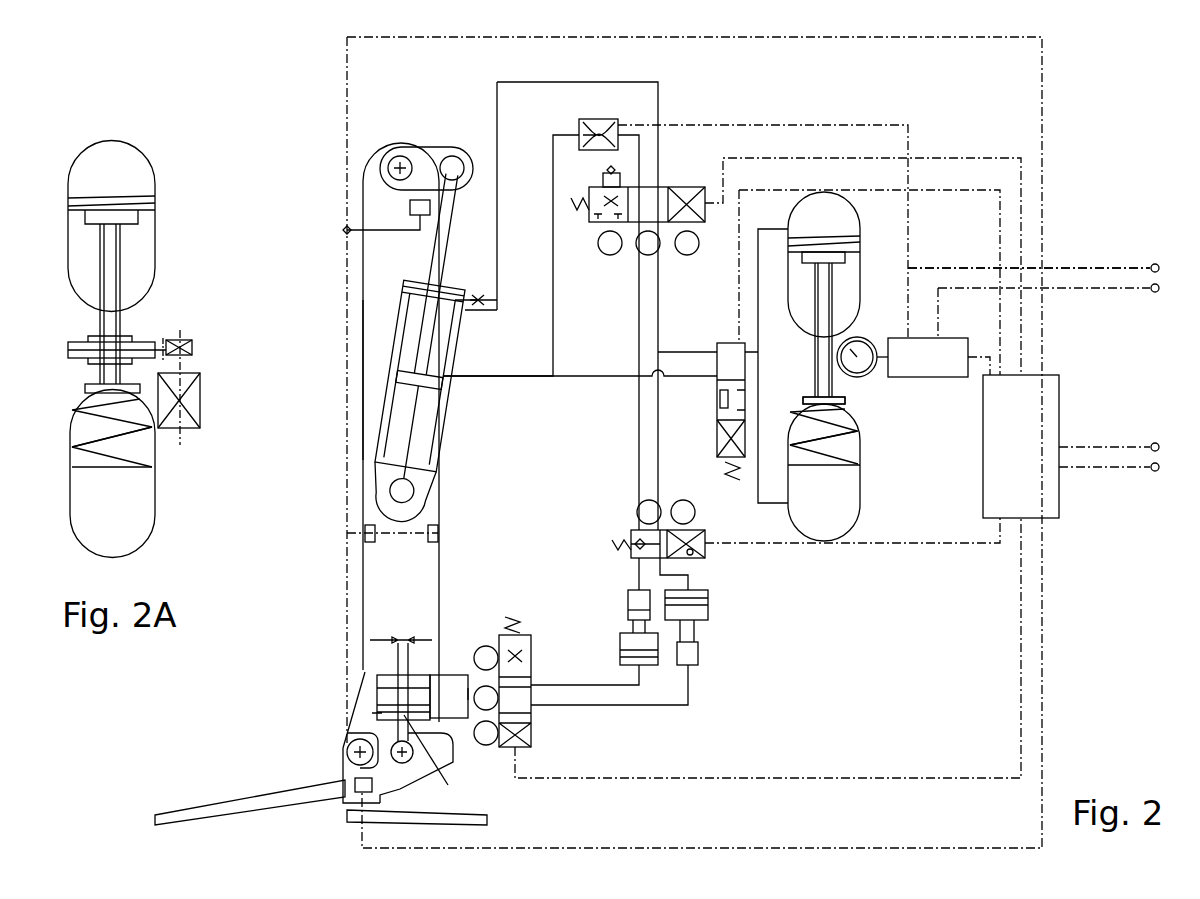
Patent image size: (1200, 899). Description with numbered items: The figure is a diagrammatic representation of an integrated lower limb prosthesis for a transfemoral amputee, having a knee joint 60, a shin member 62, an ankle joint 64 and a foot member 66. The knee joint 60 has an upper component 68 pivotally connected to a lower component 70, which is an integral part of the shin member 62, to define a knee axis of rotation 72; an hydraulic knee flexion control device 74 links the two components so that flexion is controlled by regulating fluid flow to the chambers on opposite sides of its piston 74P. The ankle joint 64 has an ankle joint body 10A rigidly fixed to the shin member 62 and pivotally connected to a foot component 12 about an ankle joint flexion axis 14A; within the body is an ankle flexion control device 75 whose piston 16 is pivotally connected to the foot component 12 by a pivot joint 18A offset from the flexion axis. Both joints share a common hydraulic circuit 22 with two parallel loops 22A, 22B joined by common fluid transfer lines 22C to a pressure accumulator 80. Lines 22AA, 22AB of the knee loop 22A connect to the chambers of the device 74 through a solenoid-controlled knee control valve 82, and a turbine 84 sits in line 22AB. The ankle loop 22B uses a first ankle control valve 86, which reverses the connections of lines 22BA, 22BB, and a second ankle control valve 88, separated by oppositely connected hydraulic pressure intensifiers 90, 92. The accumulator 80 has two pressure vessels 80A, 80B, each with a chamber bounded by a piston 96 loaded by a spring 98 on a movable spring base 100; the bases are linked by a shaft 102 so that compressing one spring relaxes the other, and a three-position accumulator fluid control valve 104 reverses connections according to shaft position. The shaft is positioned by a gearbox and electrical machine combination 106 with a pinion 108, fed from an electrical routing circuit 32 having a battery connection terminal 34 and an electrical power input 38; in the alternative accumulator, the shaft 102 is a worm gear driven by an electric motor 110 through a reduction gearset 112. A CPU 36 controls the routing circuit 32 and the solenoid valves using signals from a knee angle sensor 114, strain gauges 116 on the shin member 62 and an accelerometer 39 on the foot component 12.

In FIG. 2, the ankle joint body 10A is at (347, 728).
In FIG. 2, the foot component 12 is at (343, 775).
In FIG. 2, the ankle joint flexion axis 14A is at (346, 749).
In FIG. 2, the piston 16 is at (380, 688).
In FIG. 2, the pivot pin 18A is at (401, 768).
In FIG. 2, the hydraulic circuit 22 is at (577, 408).
In FIG. 2, the first hydraulic loop 22A is at (582, 325).
In FIG. 2, the hydraulic line 22AA is at (497, 90).
In FIG. 2, the hydraulic line 22AB is at (562, 135).
In FIG. 2, the hydraulic loop 22B is at (535, 578).
In FIG. 2, the hydraulic line 22BA is at (453, 718).
In FIG. 2, the hydraulic line 22BB is at (452, 675).
In FIG. 2, the fluid transfer lines 22C is at (683, 372).
In FIG. 2, the electrical routing circuit 32 is at (948, 338).
In FIG. 2, the battery connection terminal 34 is at (1153, 292).
In FIG. 2, the CPU 36 is at (1059, 405).
In FIG. 2, the electrical power input 38 is at (1153, 264).
In FIG. 2, the accelerometer 39 is at (356, 792).
In FIG. 2, the knee joint 60 is at (345, 152).
In FIG. 2, the shin member 62 is at (363, 382).
In FIG. 2, the ankle joint 64 is at (300, 695).
In FIG. 2, the foot member 66 is at (188, 792).
In FIG. 2, the upper component 68 is at (433, 157).
In FIG. 2, the lower component 70 is at (375, 192).
In FIG. 2, the knee axis of rotation 72 is at (400, 165).
In FIG. 2, the hydraulic knee flexion control device 74 is at (395, 331).
In FIG. 2, the piston 74P is at (402, 290).
In FIG. 2, the ankle flexion control device 75 is at (380, 697).
In FIG. 2, the pressure accumulator 80 is at (870, 263).
In FIG. 2A, the first pressure vessel 80A is at (125, 142).
In FIG. 2, the first pressure vessel 80A is at (818, 192).
In FIG. 2A, the second pressure vessel 80B is at (150, 538).
In FIG. 2, the second pressure vessel 80B is at (860, 522).
In FIG. 2, the knee control valve 82 is at (660, 187).
In FIG. 2, the turbine 84 is at (618, 121).
In FIG. 2, the first ankle control valve 86 is at (531, 733).
In FIG. 2, the second ankle control valve 88 is at (705, 550).
In FIG. 2, the first hydraulic pressure intensifier 90 is at (660, 665).
In FIG. 2, the second hydraulic pressure intensifier 92 is at (700, 620).
In FIG. 2A, the piston 96 is at (130, 200).
In FIG. 2, the piston 96 is at (835, 237).
In FIG. 2A, the spring 98 is at (140, 212).
In FIG. 2, the spring 98 is at (850, 253).
In FIG. 2, the spring base 100 is at (838, 262).
In FIG. 2A, the shaft 102 is at (100, 320).
In FIG. 2, the shaft 102 is at (815, 348).
In FIG. 2, the accumulator fluid control valve 104 is at (717, 410).
In FIG. 2, the gearbox and electrical machine combination 106 is at (872, 373).
In FIG. 2, the pinion 108 is at (868, 340).
In FIG. 2A, the electric motor 110 is at (200, 385).
In FIG. 2A, the reduction gearset 112 is at (164, 336).
In FIG. 2, the knee angle sensor 114 is at (410, 208).
In FIG. 2, the strain gauges 116 is at (430, 535).